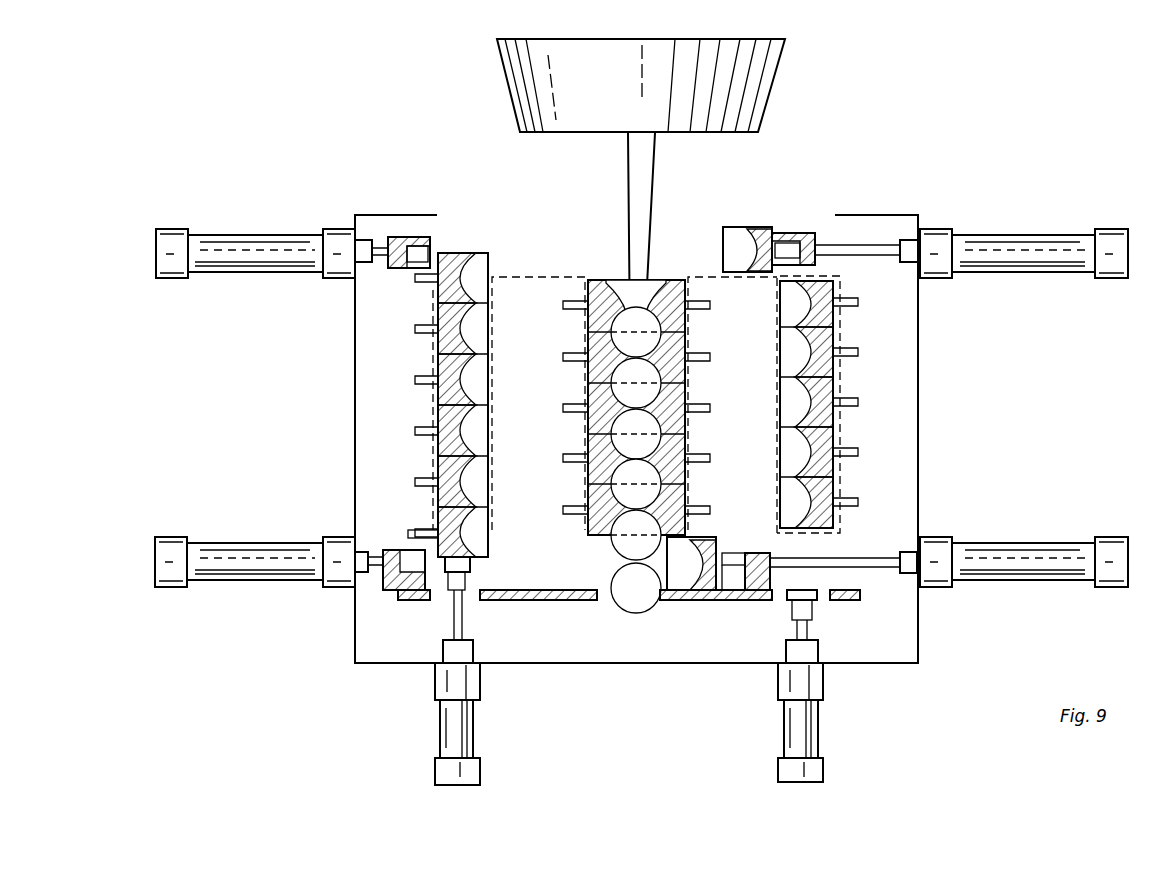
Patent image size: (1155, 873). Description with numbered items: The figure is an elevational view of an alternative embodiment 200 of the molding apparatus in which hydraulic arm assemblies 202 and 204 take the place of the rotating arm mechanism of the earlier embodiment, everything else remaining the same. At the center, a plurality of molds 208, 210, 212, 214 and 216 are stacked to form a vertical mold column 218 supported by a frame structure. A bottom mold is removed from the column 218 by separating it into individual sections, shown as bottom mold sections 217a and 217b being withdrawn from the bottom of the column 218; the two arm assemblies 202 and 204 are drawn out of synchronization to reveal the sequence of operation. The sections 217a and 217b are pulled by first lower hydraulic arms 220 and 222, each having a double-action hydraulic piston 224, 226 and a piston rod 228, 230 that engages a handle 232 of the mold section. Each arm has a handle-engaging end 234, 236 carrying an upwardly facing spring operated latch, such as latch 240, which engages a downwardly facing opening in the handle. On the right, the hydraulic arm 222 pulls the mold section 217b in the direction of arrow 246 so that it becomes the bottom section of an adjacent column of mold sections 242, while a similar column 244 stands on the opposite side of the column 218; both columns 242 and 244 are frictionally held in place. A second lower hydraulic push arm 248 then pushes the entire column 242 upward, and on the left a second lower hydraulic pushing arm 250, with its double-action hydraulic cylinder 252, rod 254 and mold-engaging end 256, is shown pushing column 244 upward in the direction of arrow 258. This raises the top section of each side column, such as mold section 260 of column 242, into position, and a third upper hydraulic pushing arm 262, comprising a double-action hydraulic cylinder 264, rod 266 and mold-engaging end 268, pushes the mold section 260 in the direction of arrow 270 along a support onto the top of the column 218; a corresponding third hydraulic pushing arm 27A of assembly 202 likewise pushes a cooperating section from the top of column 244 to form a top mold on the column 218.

The alternative embodiment 200 is at (942, 214).
The hydraulic arm assembly 202 is at (210, 342).
The hydraulic arm assembly 204 is at (924, 406).
The mold 208 is at (686, 318).
The mold 210 is at (686, 373).
The mold 212 is at (686, 425).
The mold 214 is at (686, 475).
The mold 216 is at (686, 522).
The bottom mold section 217a is at (482, 548).
The bottom mold section 217b is at (699, 600).
The vertical mold column 218 is at (644, 446).
The first lower hydraulic arm 220 is at (219, 552).
The first lower hydraulic arm 222 is at (1019, 552).
The double-action hydraulic piston 224 is at (240, 569).
The double-action hydraulic piston 226 is at (1003, 582).
The piston rod 228 is at (383, 551).
The piston rod 230 is at (867, 562).
The handle 232 is at (422, 530).
The handle-engaging end 234 is at (390, 596).
The handle-engaging end 236 is at (771, 575).
The spring operated latch 240 is at (726, 567).
The column of mold sections 242 is at (834, 378).
The column of mold sections 244 is at (437, 401).
The arrow 246 is at (810, 548).
The second lower hydraulic push arm 248 is at (821, 730).
The second lower hydraulic pushing arm 250 is at (476, 741).
The double-action hydraulic cylinder 252 is at (724, 553).
The rod 254 is at (461, 622).
The mold-engaging end 256 is at (471, 568).
The arrow 258 is at (426, 614).
The mold section 260 is at (762, 230).
The third upper hydraulic pushing arm 262 is at (1040, 236).
The double-action hydraulic cylinder 264 is at (1072, 268).
The rod 266 is at (866, 258).
The mold-engaging end 268 is at (812, 232).
The arrow 270 is at (842, 237).
The third hydraulic pushing arm 27A is at (258, 237).